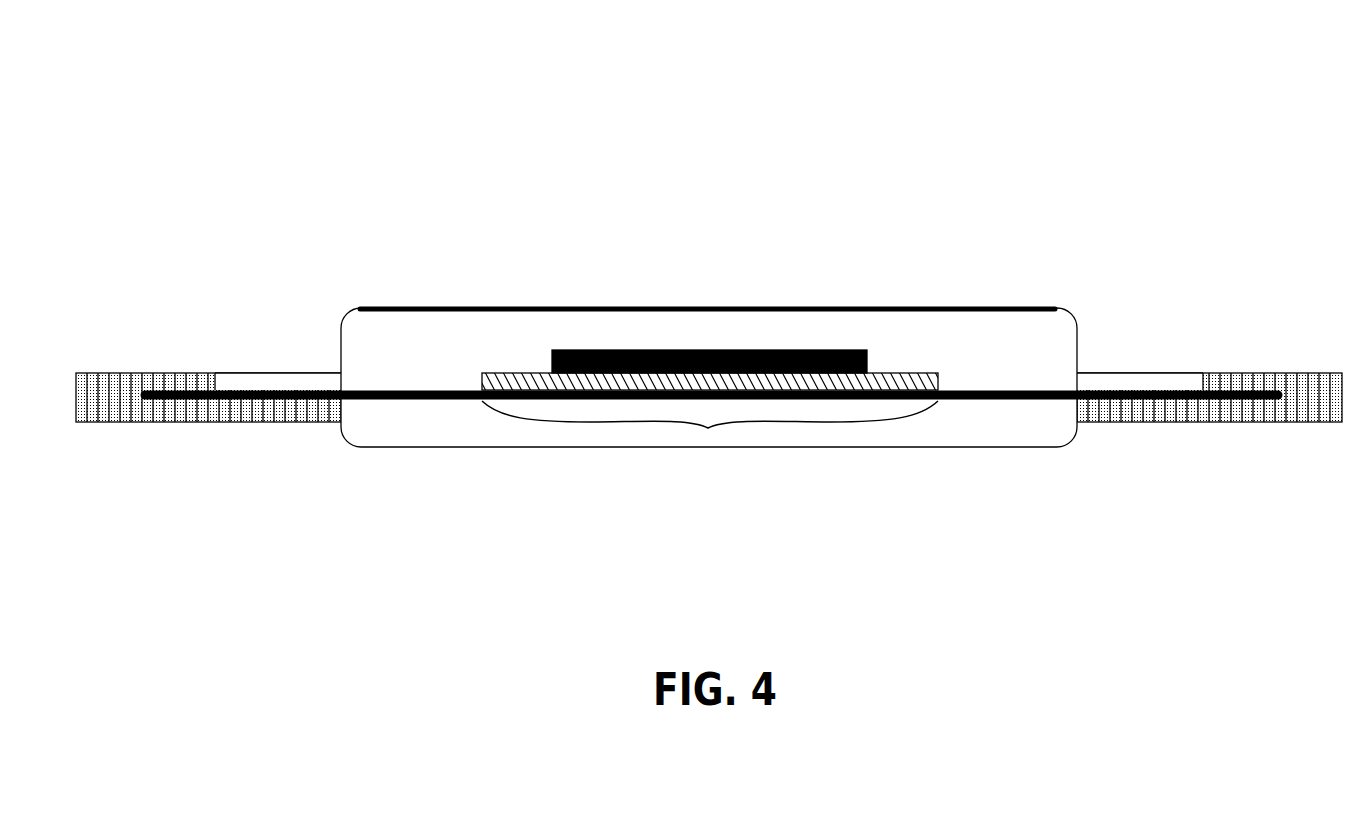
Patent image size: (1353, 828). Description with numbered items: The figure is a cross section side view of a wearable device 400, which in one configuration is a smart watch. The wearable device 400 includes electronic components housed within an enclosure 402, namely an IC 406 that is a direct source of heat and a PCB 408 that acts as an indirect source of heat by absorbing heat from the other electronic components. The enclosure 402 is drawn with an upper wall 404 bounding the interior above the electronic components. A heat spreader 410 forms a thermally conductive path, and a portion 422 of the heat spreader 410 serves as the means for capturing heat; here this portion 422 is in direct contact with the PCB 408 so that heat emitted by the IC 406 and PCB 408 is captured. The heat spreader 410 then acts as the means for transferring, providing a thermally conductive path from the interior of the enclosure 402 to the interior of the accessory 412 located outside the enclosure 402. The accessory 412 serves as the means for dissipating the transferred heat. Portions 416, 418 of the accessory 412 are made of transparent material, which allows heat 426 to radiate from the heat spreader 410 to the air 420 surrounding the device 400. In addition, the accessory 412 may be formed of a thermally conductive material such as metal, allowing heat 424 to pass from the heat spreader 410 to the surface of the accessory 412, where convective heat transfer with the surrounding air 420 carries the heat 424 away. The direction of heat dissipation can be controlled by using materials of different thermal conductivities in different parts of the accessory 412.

The wearable device 400 is at (226, 84).
The enclosure 402 is at (1079, 334).
The top layer of housing 404 is at (981, 306).
The IC 406 is at (868, 350).
The PCB 408 is at (924, 372).
The heat spreader 410 is at (383, 391).
The accessory 412 is at (133, 372).
The portion of the accessory 416 is at (258, 376).
The portion of the accessory 418 is at (1148, 376).
The air 420 is at (228, 196).
The portion of the heat spreader 422 is at (708, 428).
The heat 424 is at (188, 390).
The heat 426 is at (317, 392).